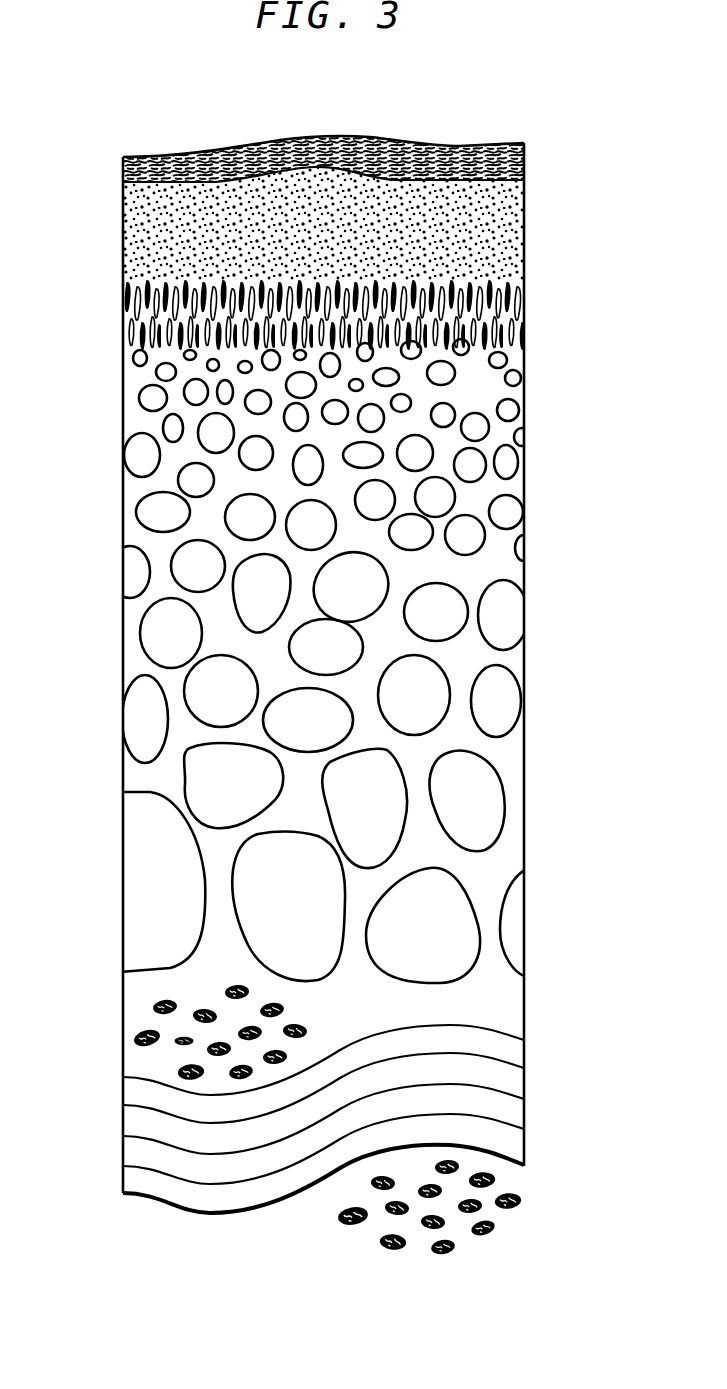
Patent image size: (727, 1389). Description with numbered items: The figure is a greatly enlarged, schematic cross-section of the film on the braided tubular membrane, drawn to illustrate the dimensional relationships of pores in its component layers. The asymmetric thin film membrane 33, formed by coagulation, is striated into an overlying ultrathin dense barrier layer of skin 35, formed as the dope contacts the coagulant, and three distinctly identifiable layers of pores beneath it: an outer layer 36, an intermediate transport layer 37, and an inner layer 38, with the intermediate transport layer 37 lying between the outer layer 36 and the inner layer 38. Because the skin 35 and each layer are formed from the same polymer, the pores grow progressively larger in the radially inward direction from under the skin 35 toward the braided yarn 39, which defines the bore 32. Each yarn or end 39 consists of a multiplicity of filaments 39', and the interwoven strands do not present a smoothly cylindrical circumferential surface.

The bore 32 is at (327, 1326).
The asymmetric thin film membrane 33 is at (545, 583).
The skin 35 is at (531, 145).
The outer layer 36 is at (114, 185).
The intermediate transport layer 37 is at (114, 283).
The inner layer 38 is at (110, 348).
The braided yarn 39 is at (279, 1098).
The filaments 39' is at (415, 1226).